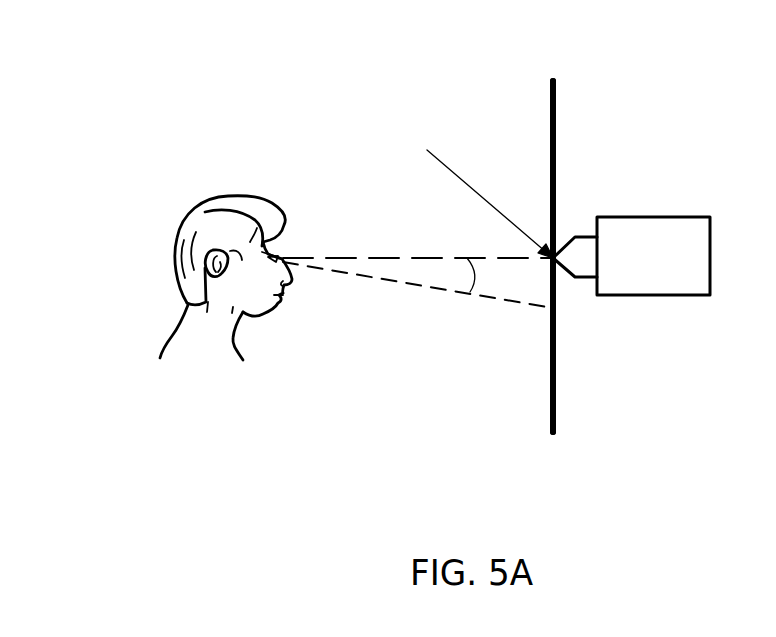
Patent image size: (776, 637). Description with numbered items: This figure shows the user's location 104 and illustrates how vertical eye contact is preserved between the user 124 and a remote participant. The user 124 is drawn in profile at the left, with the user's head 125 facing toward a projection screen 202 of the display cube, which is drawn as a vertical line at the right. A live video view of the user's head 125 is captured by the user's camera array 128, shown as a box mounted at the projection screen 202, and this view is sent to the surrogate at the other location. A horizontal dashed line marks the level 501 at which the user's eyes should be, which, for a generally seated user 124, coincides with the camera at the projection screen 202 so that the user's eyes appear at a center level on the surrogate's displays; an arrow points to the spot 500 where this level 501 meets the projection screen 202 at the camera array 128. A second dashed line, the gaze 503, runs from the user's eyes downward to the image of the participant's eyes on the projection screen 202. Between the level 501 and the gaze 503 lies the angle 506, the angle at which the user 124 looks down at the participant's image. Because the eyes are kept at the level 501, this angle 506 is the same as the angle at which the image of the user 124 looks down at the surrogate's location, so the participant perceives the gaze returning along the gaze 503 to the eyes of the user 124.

The user 124 is at (227, 366).
The user's head 125 is at (172, 268).
The level 501 is at (418, 257).
The gaze 503 is at (423, 291).
The gaze point on display 500 is at (480, 189).
The angle 506 is at (477, 273).
The projection screen 202 is at (552, 108).
The user's location 104 is at (515, 427).
The user's camera array 128 is at (670, 269).